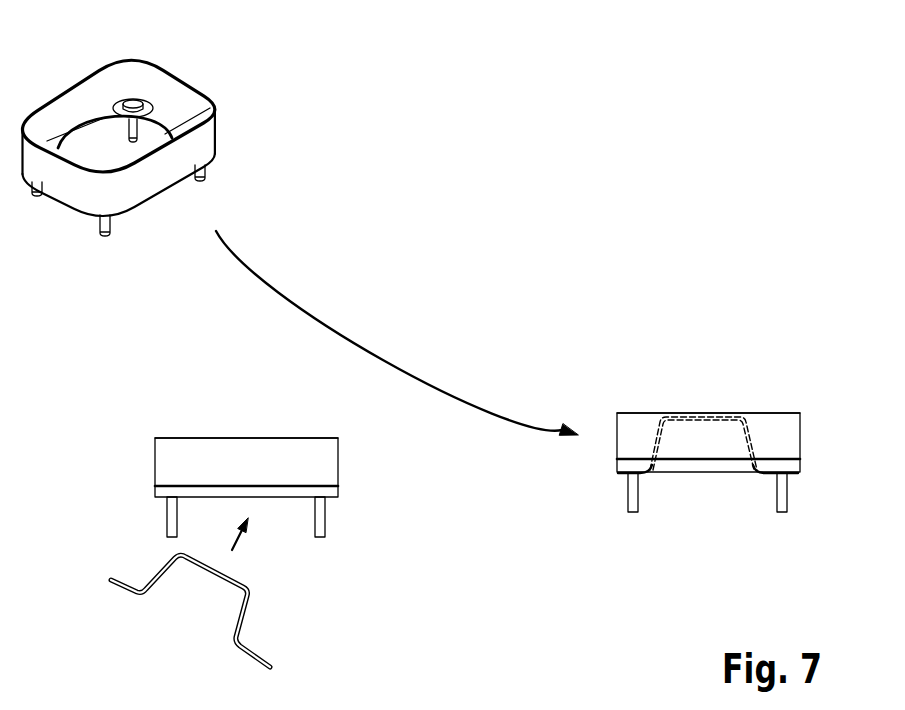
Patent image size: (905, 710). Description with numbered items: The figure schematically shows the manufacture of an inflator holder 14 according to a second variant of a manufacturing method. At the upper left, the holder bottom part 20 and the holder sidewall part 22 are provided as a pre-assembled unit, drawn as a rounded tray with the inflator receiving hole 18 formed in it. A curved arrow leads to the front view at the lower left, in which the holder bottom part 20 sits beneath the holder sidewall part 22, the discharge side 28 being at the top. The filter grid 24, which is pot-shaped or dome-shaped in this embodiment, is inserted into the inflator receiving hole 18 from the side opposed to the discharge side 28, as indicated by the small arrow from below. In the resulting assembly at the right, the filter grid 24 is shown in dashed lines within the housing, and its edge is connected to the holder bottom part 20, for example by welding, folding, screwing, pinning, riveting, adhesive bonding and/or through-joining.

The inflator holder 14 is at (711, 388).
The inflator receiving hole 18 is at (91, 147).
The holder bottom part 20 is at (163, 117).
The holder sidewall part 22 is at (203, 137).
The filter grid 24 is at (247, 618).
The discharge side 28 is at (202, 437).